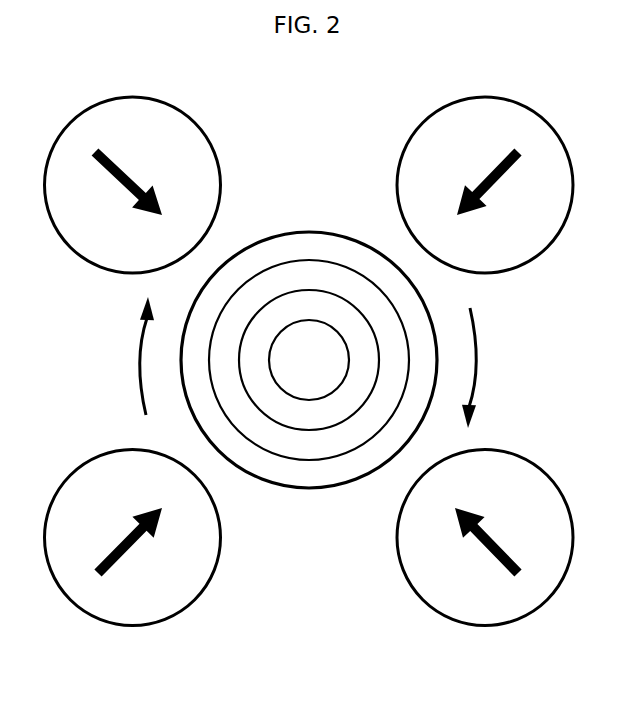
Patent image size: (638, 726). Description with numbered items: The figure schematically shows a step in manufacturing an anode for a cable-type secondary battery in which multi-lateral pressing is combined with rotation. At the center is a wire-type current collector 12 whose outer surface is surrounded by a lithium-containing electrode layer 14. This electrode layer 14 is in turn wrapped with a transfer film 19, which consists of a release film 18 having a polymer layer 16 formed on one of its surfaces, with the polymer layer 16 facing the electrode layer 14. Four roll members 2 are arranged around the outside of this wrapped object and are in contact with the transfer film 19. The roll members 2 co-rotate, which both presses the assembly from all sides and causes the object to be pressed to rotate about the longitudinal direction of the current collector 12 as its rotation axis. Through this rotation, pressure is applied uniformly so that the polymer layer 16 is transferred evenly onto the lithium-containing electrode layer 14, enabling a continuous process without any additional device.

The roll member 2 is at (177, 122).
The wire-type current collector 12 is at (300, 345).
The lithium-containing electrode layer 14 is at (315, 305).
The polymer layer 16 is at (295, 443).
The release film 18 is at (318, 475).
The transfer film 19 is at (309, 405).